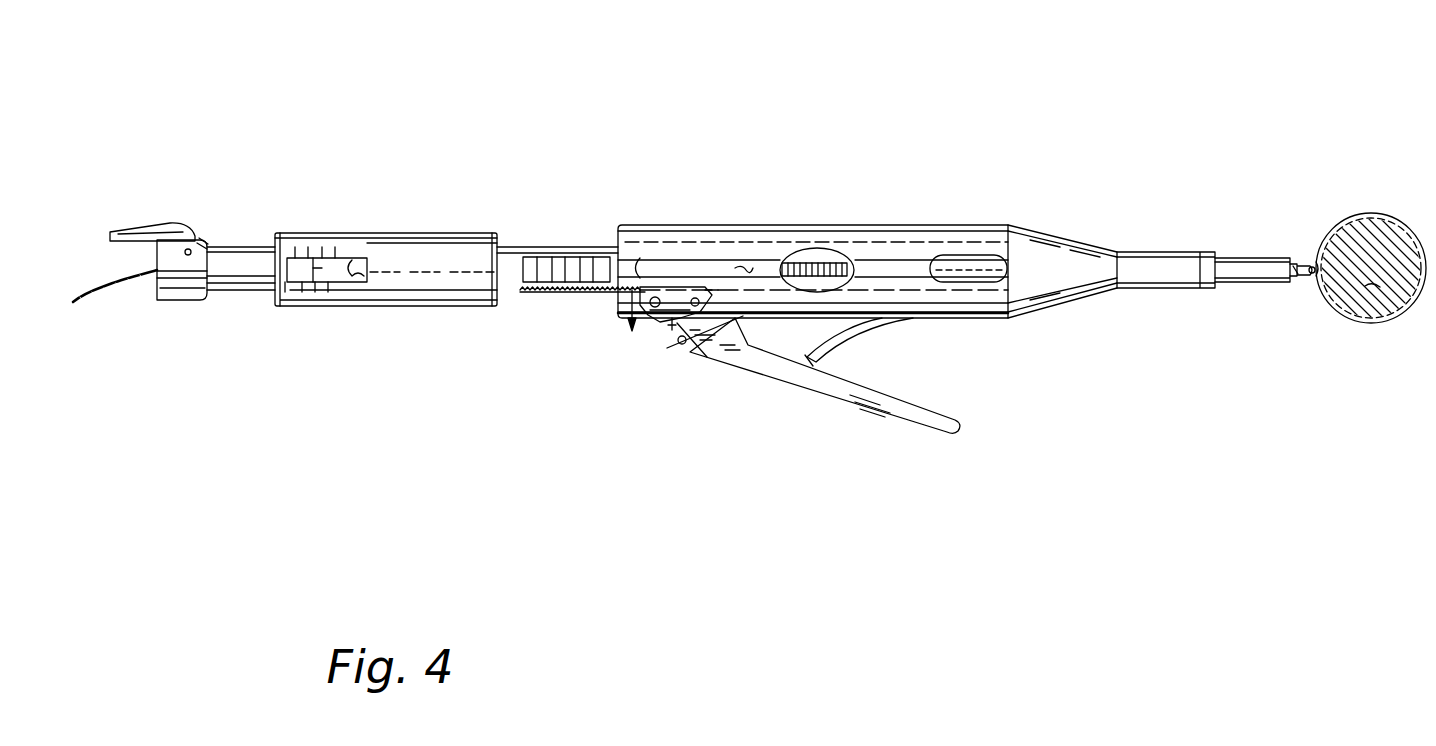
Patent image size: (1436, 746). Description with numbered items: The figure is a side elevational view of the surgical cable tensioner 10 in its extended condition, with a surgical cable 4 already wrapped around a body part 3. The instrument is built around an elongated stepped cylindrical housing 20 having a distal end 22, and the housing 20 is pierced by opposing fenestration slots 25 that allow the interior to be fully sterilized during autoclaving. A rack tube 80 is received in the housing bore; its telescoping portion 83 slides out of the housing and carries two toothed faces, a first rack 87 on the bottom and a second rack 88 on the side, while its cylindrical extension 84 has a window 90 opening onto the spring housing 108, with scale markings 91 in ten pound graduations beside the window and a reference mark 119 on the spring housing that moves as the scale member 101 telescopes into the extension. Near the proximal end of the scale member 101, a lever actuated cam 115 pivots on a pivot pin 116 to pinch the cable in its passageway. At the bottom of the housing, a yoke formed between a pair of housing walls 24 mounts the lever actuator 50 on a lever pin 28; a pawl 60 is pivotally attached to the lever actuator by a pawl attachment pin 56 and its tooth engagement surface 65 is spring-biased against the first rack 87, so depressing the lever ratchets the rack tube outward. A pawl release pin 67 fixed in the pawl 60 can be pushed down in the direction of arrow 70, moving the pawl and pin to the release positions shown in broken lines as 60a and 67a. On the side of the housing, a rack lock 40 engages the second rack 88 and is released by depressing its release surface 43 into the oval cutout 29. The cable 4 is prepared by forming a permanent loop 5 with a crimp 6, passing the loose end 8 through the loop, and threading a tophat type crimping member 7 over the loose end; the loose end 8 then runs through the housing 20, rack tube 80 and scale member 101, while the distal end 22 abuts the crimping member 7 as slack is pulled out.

The surgical cable tensioner 10 is at (1130, 121).
The housing 20 is at (943, 225).
The fenestration slots 25 is at (980, 262).
The surgical cable 4 is at (1365, 213).
The body part 3 is at (1377, 288).
The distal end 22 is at (1292, 264).
The loop 5 is at (1316, 262).
The crimp 6 is at (1320, 280).
The tophat type crimping member 7 is at (1305, 274).
The loose end 8 is at (97, 302).
The scale member 101 is at (180, 310).
The lever actuated cam 115 is at (163, 222).
The pivot pin 116 is at (193, 238).
The reference mark 119 is at (322, 268).
The spring housing 108 is at (356, 270).
The window 90 is at (350, 277).
The scale markings 91 is at (307, 308).
The rack tube 80 is at (483, 308).
The cylindrical extension 84 is at (492, 232).
The second rack 88 is at (563, 257).
The telescoping portion 83 is at (598, 247).
The first rack 87 is at (527, 295).
The arrow 70 is at (623, 308).
The tooth engagement surface 65 is at (655, 296).
The pawl 60 is at (665, 290).
The pawl release pin 67 is at (695, 297).
The pawl attachment pin 56 is at (712, 289).
The rack lock 40 is at (747, 266).
The release surface 43 is at (818, 262).
The oval cutout 29 is at (847, 256).
The pawl release pin release position 67a is at (657, 330).
The pawl release position 60a is at (672, 338).
The lever pin 28 is at (684, 344).
The housing walls 24 is at (710, 340).
The lever actuator 50 is at (893, 418).